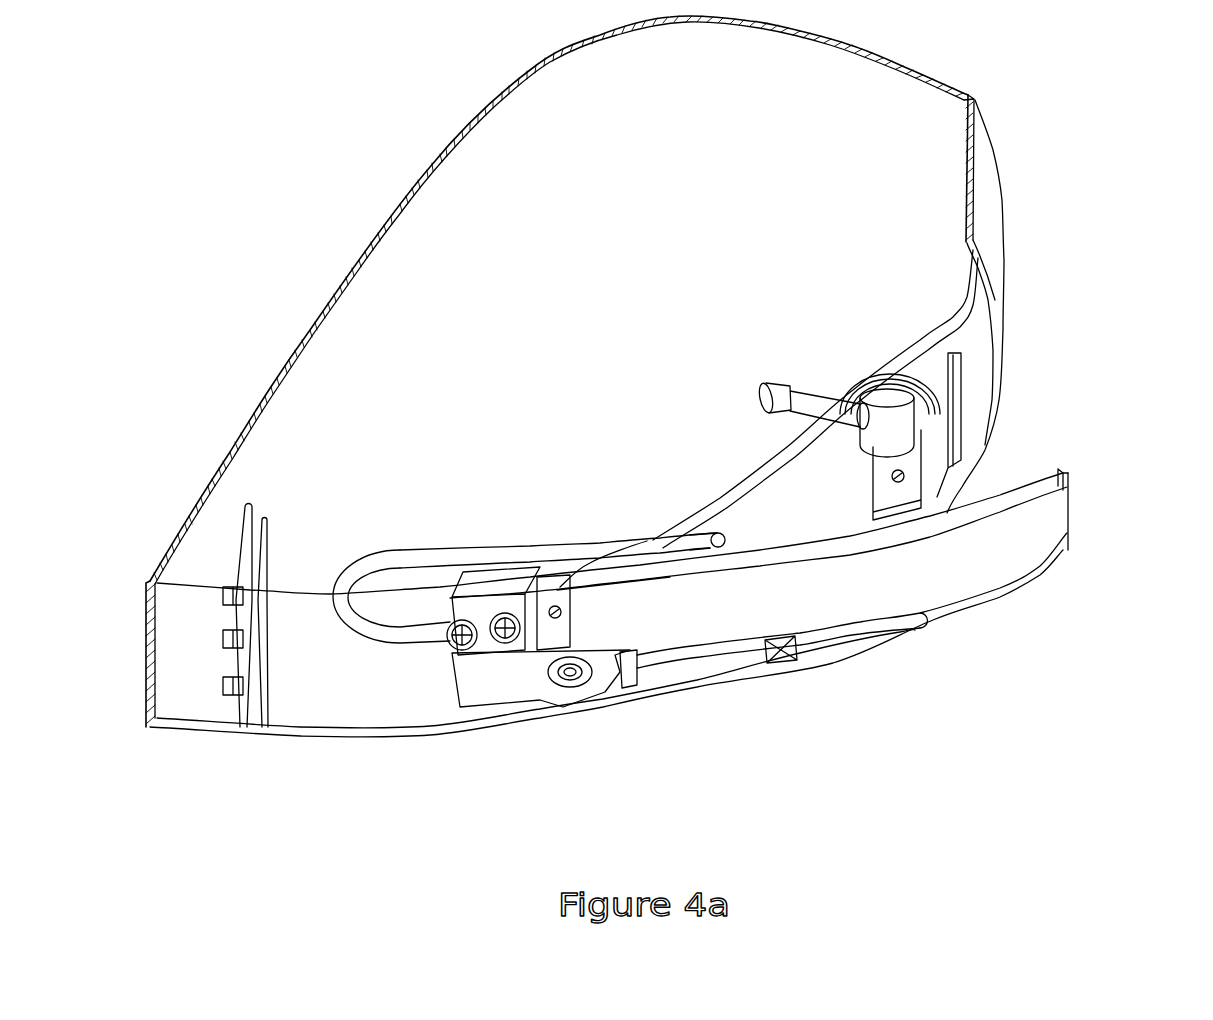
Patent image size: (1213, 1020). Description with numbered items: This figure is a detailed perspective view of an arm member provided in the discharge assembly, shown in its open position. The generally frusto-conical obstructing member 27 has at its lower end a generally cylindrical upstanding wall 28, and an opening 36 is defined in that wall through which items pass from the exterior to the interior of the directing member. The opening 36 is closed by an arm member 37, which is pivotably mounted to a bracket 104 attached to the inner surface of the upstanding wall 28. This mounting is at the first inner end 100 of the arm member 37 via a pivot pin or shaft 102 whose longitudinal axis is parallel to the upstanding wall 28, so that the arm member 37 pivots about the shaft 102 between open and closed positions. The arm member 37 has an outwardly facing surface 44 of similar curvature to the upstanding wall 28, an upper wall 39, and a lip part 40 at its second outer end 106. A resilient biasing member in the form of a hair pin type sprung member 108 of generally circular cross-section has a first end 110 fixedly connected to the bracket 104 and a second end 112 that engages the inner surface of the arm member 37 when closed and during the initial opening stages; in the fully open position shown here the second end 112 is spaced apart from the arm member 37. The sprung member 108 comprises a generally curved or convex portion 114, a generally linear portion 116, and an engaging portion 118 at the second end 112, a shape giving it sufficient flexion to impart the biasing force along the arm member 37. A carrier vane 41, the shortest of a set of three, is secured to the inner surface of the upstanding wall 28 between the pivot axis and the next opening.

The obstructing member 27 is at (887, 103).
The cylindrical wall 28 is at (340, 694).
The opening 36 is at (949, 511).
The arm member 37 is at (1048, 584).
The upper wall 39 is at (845, 470).
The lip part 40 is at (1064, 481).
The carrier vane 41 is at (247, 738).
The outwardly facing surface 44 is at (1012, 606).
The first inner end 100 is at (604, 707).
The pivot pin or shaft 102 is at (570, 690).
The bracket 104 is at (502, 689).
The second outer end 106 is at (1080, 529).
The sprung member 108 is at (643, 556).
The first end 110 is at (444, 642).
The second end 112 is at (737, 552).
The convex portion 114 is at (353, 566).
The linear portion 116 is at (530, 550).
The engaging portion 118 is at (720, 548).